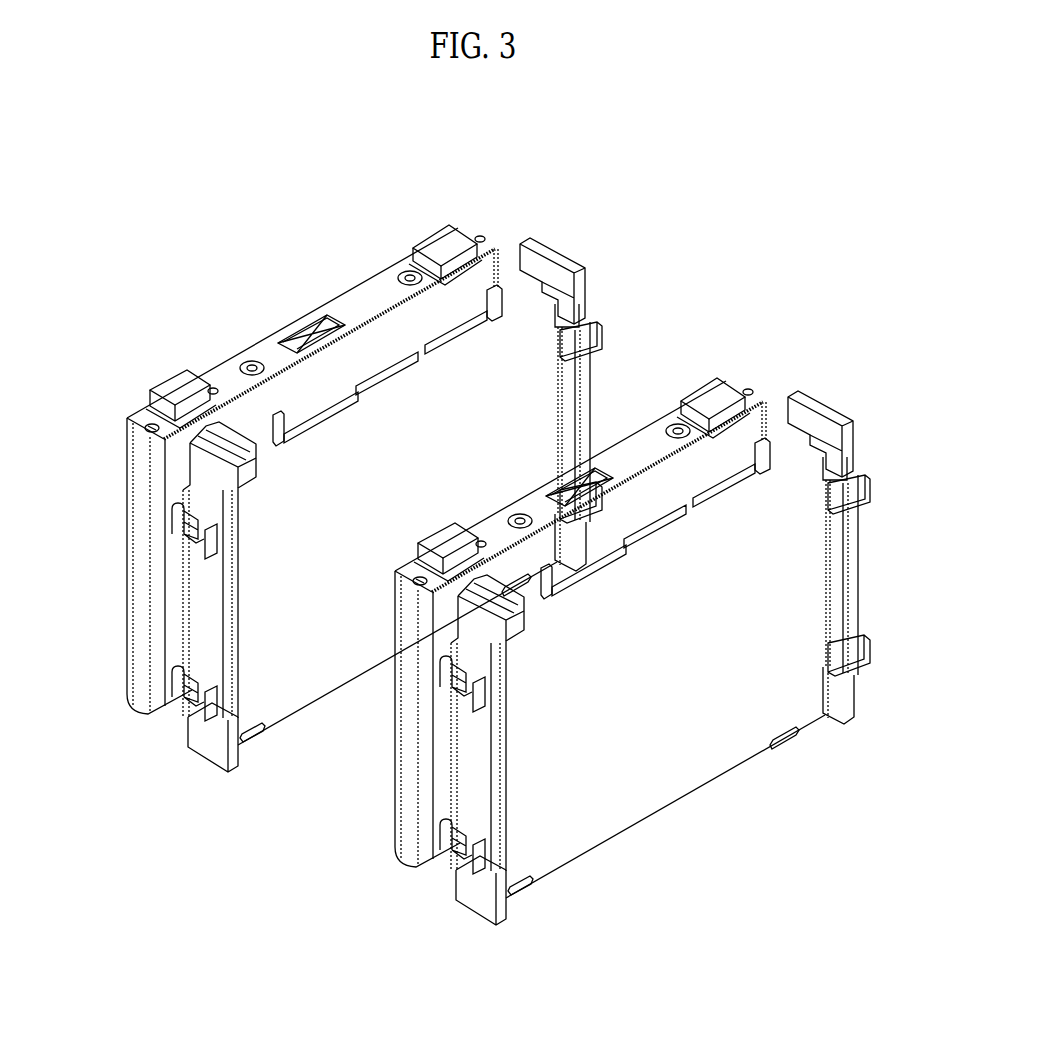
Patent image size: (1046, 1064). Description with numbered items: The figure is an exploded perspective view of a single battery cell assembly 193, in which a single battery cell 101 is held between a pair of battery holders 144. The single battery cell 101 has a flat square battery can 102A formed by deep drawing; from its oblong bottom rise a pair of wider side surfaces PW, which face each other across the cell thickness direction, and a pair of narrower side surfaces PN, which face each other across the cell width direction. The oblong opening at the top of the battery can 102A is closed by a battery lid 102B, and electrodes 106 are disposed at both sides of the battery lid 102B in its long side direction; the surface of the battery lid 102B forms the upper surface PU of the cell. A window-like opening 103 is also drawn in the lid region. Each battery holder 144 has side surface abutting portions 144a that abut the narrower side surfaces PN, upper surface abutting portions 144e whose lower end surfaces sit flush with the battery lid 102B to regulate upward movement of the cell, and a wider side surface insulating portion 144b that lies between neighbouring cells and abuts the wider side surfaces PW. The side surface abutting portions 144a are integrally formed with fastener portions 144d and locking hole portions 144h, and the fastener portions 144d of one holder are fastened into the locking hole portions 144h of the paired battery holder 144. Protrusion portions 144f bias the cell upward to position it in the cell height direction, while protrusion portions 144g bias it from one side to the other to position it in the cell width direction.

The single battery cell assembly 193 is at (574, 184).
The single battery cell 101 is at (147, 729).
The battery can 102A is at (170, 716).
The battery lid 102B is at (379, 288).
The window opening 103 is at (310, 329).
The electrode 106 is at (437, 237).
The upper surface PU is at (262, 353).
The narrower side surface PN is at (150, 585).
The wider side surface PW is at (170, 592).
The battery holder 144 is at (583, 263).
The side surface abutting portion 144a is at (578, 384).
The wider side surface insulating portion 144b is at (330, 687).
The fastener portion 144d is at (599, 329).
The upper surface abutting portion 144e is at (455, 356).
The protrusion portion 144f is at (266, 743).
The protrusion portion 144g is at (551, 318).
The locking hole portion 144h is at (228, 543).